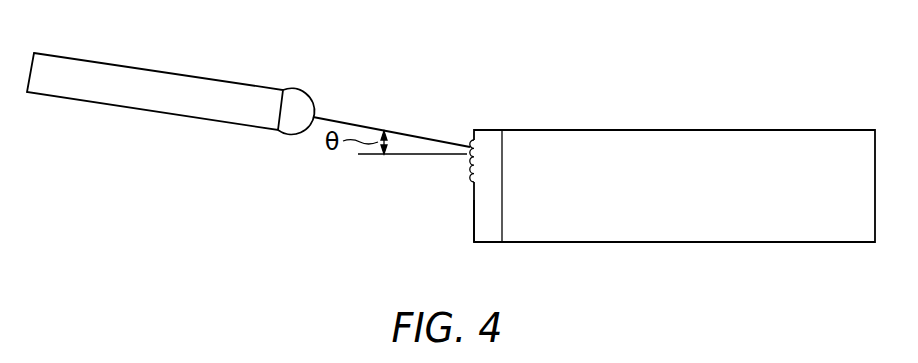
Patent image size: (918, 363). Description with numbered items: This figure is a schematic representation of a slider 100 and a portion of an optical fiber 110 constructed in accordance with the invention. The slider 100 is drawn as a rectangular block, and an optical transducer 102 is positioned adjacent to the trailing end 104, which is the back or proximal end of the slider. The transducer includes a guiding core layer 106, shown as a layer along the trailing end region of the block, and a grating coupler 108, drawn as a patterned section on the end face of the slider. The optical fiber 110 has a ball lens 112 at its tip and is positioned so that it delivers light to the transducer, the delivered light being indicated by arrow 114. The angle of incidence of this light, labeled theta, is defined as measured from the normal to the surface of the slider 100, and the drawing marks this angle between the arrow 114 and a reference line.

The slider 100 is at (762, 108).
The optical transducer 102 is at (474, 200).
The trailing end 104 is at (417, 189).
The guiding core layer 106 is at (474, 236).
The grating coupler 108 is at (469, 145).
The optical fiber 110 is at (171, 115).
The ball lens 112 is at (297, 88).
The arrow 114 is at (360, 125).